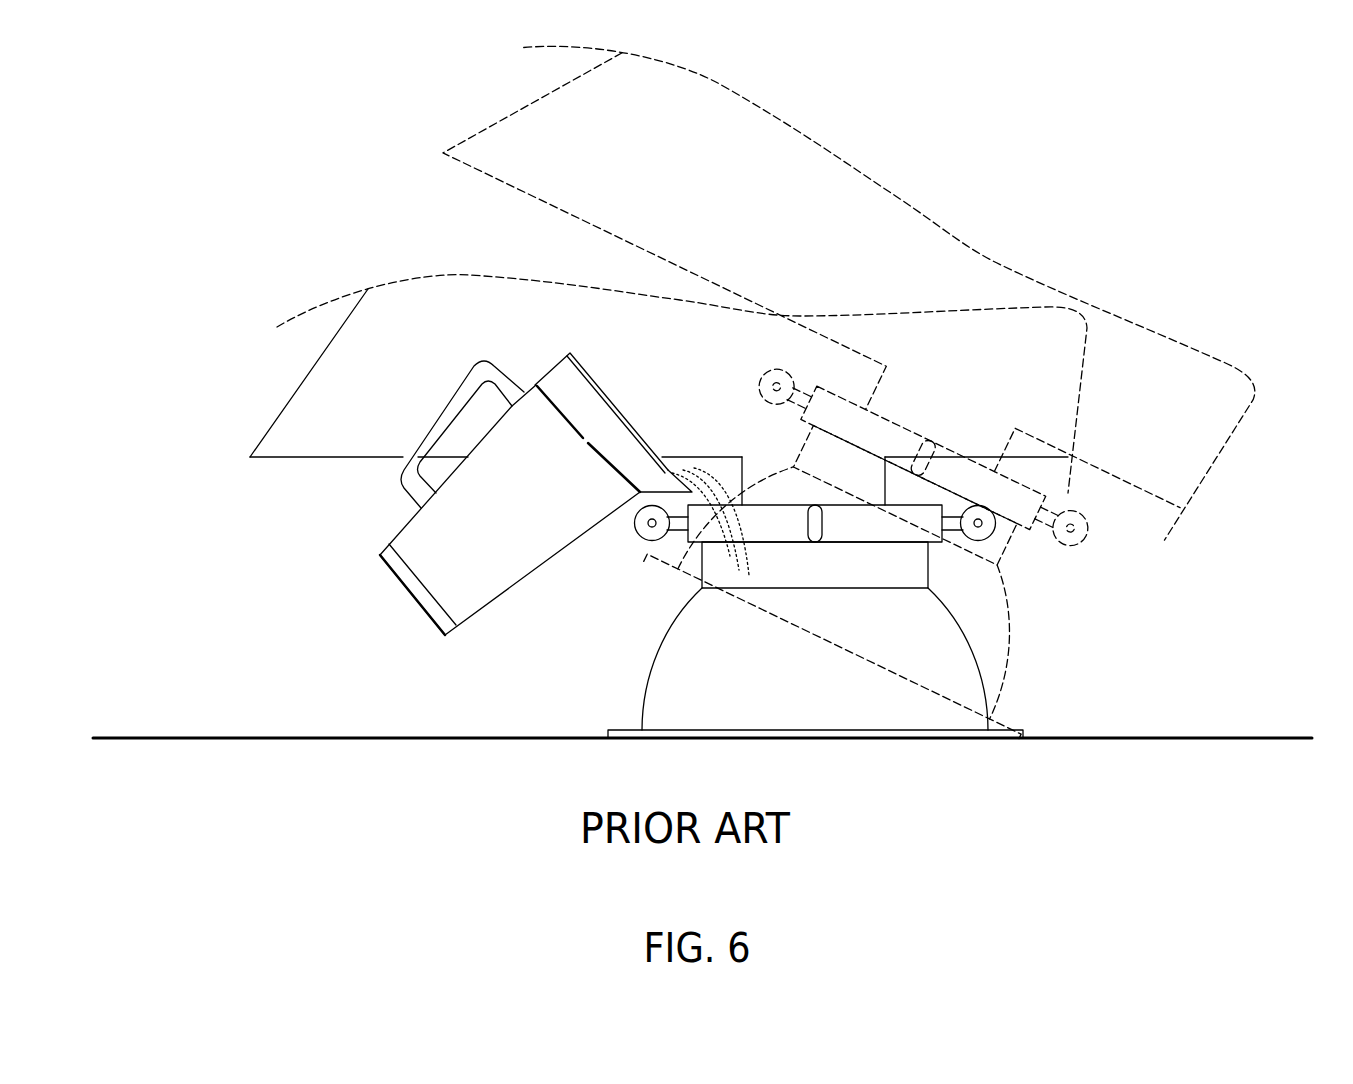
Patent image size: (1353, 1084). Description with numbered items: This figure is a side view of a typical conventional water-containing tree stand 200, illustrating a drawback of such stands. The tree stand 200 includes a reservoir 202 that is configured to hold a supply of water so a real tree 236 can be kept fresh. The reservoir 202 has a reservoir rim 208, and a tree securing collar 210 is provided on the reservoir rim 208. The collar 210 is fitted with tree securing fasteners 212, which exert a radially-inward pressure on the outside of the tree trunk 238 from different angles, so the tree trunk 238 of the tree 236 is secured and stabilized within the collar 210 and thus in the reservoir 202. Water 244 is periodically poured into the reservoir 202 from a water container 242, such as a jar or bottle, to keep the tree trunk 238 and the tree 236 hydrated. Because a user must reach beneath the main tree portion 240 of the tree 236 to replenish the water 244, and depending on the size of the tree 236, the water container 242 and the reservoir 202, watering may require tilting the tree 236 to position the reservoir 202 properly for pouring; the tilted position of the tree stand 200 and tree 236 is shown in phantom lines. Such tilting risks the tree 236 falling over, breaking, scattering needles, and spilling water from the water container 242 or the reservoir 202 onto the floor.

The conventional tree stand 200 is at (1120, 589).
The reservoir 202 is at (652, 641).
The reservoir rim 208 is at (838, 577).
The tree securing collar 210 is at (903, 533).
The tree securing fasteners 212 is at (636, 530).
The tree 236 is at (292, 383).
The tree trunk 238 is at (742, 470).
The main tree portion 240 is at (370, 407).
The water container 242 is at (466, 602).
The water 244 is at (735, 562).